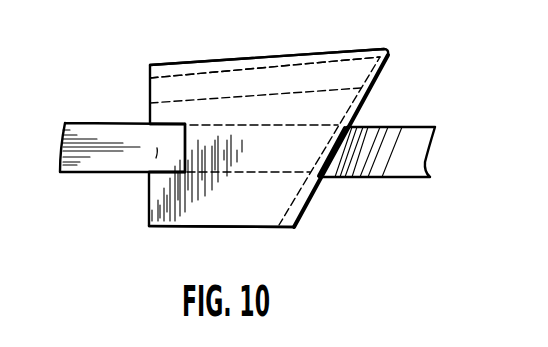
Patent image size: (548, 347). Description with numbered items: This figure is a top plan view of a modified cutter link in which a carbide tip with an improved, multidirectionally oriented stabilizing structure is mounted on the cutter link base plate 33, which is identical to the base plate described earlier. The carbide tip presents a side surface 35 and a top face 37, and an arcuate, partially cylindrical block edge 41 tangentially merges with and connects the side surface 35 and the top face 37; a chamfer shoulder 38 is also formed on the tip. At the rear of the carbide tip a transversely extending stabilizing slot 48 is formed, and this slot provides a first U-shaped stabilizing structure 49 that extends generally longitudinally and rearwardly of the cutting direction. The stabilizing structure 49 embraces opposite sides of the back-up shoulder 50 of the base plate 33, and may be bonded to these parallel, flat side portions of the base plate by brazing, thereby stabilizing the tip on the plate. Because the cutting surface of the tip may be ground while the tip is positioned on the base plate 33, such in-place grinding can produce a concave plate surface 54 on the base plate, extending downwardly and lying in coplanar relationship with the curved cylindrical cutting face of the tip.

The base plate 33 is at (399, 128).
The side surface 35 is at (236, 66).
The top face 37 is at (251, 206).
The chamfer shoulder 38 is at (280, 78).
The block edge 41 is at (172, 63).
The stabilizing slot 48 is at (147, 144).
The U-shaped stabilizing structure 49 is at (165, 177).
The back-up shoulder 50 is at (157, 155).
The concave plate surface 54 is at (420, 171).